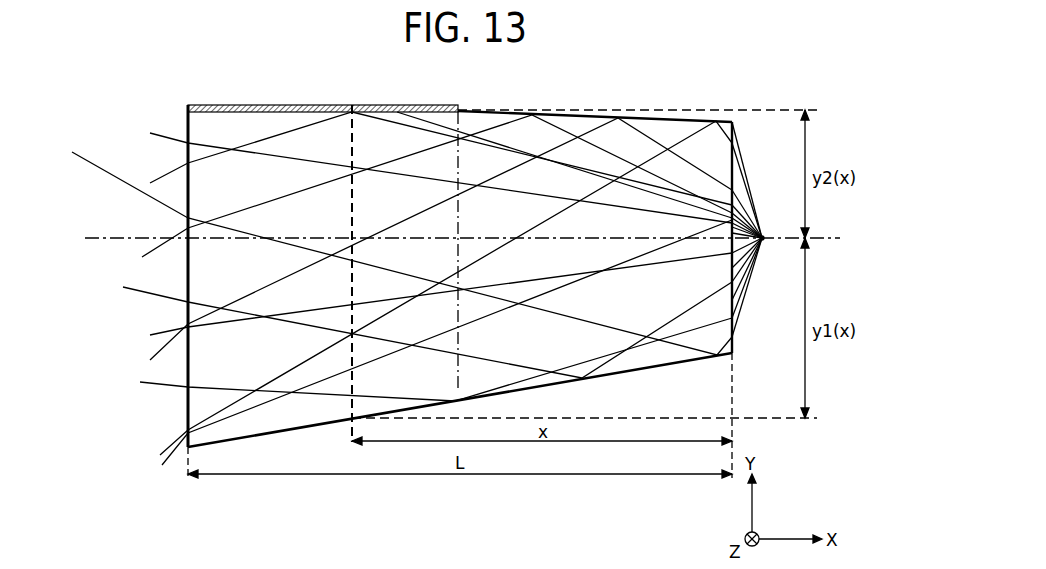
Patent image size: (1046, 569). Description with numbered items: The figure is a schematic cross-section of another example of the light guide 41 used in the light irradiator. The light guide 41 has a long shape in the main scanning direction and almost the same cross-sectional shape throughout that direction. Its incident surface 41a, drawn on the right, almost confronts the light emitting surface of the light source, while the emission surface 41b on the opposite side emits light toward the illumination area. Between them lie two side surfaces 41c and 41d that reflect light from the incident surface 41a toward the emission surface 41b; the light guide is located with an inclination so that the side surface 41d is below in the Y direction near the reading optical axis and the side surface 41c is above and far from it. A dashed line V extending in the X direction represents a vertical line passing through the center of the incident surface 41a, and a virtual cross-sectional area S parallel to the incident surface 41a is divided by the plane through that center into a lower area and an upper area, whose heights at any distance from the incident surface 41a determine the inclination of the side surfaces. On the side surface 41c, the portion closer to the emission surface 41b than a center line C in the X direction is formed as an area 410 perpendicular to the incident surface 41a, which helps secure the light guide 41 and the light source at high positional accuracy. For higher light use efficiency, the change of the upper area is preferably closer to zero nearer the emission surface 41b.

The light guide 41 is at (466, 250).
The incident surface 41a is at (734, 295).
The emission surface 41b is at (188, 393).
The side surface 41c is at (722, 122).
The side surface 41d is at (627, 371).
The area perpendicular to the incident surface 410 is at (395, 105).
The virtual cross-sectional area S is at (353, 103).
The center line C is at (466, 163).
The dashed line V is at (130, 240).